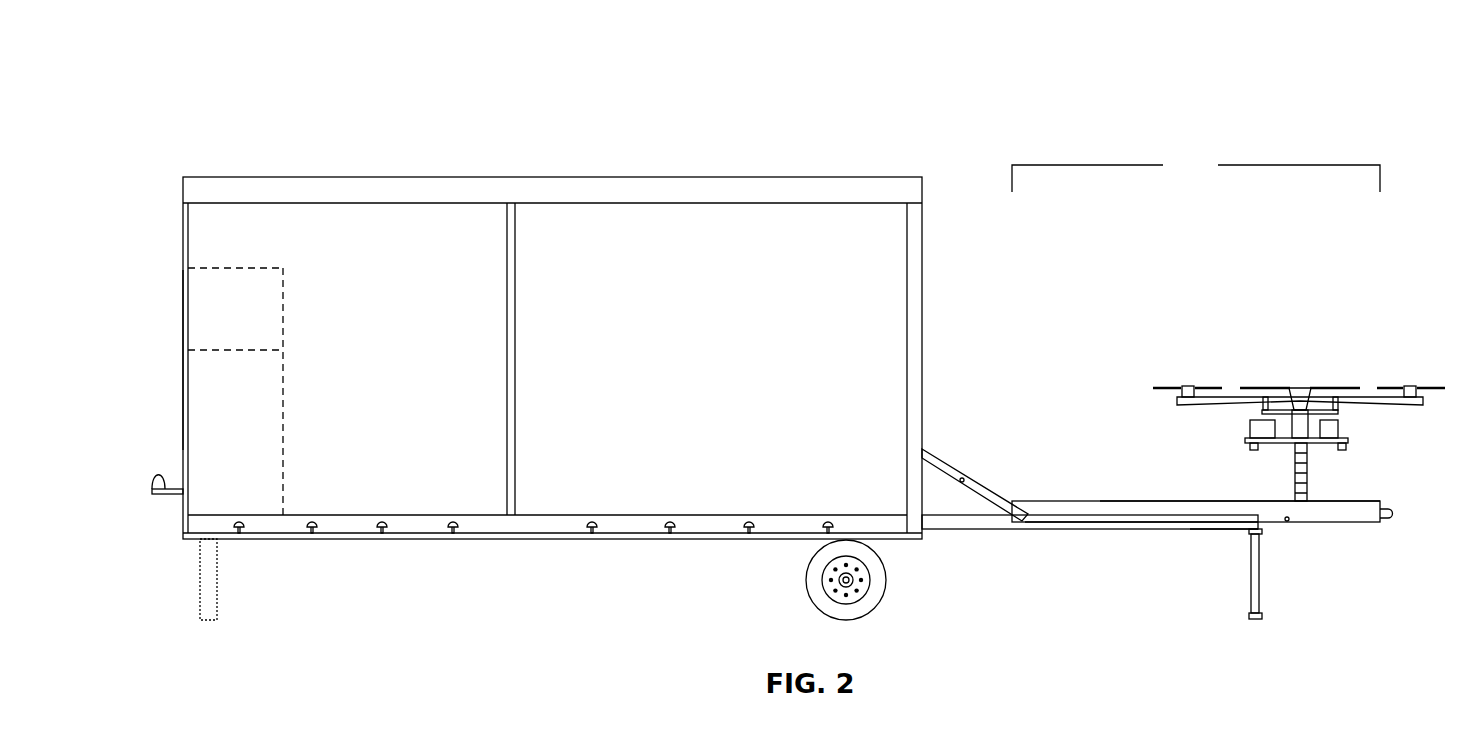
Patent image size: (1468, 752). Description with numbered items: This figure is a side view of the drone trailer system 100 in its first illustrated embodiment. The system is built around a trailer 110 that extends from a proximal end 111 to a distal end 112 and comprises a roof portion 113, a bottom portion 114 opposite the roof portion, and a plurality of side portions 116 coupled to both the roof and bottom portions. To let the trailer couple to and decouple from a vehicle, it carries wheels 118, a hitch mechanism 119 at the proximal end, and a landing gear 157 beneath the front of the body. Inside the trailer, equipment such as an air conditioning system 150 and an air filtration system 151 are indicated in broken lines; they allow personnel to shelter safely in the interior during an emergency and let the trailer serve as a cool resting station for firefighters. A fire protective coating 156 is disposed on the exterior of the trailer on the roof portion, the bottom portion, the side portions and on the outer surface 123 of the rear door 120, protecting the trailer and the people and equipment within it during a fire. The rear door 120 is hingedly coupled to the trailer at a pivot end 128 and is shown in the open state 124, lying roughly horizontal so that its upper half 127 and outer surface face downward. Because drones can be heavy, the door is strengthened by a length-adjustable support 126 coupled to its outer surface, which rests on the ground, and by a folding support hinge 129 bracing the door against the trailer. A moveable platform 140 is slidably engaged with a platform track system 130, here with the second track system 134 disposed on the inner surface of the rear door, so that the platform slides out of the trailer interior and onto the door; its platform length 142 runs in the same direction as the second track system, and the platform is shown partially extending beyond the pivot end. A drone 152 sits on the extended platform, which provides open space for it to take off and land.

The drone trailer system 100 is at (272, 102).
The trailer 110 is at (372, 177).
The proximal end 111 is at (183, 258).
The distal end 112 is at (922, 268).
The roof portion 113 is at (820, 177).
The bottom portion 114 is at (597, 542).
The plurality of side portions 116 is at (183, 360).
The wheel 118 is at (822, 615).
The hitch mechanism 119 is at (160, 497).
The rear door 120 is at (1008, 533).
The outer surface 123 is at (1082, 533).
The open state 124 is at (1273, 601).
The support 126 is at (1260, 588).
The upper half 127 is at (1200, 533).
The pivot end 128 is at (1261, 533).
The folding support hinge 129 is at (933, 455).
The platform track system 130 is at (1228, 373).
The second track system 134 is at (1078, 513).
The moveable platform 140 is at (1202, 513).
The platform length 142 is at (1196, 172).
The air conditioning system 150 is at (283, 425).
The air filtration system 151 is at (283, 310).
The drone 152 is at (1347, 347).
The fire protective coating 156 is at (595, 177).
The landing gear 157 is at (200, 605).